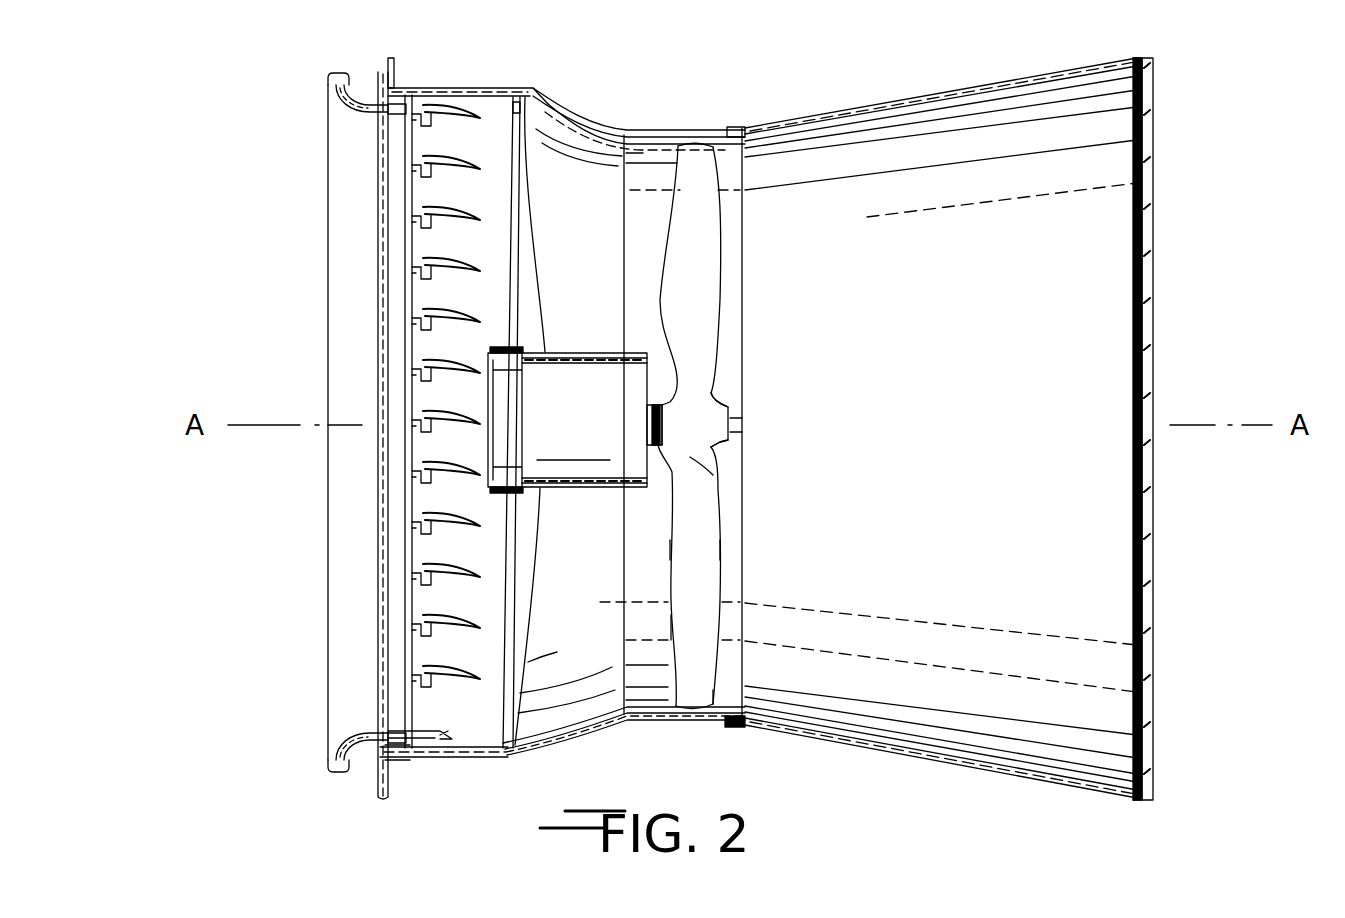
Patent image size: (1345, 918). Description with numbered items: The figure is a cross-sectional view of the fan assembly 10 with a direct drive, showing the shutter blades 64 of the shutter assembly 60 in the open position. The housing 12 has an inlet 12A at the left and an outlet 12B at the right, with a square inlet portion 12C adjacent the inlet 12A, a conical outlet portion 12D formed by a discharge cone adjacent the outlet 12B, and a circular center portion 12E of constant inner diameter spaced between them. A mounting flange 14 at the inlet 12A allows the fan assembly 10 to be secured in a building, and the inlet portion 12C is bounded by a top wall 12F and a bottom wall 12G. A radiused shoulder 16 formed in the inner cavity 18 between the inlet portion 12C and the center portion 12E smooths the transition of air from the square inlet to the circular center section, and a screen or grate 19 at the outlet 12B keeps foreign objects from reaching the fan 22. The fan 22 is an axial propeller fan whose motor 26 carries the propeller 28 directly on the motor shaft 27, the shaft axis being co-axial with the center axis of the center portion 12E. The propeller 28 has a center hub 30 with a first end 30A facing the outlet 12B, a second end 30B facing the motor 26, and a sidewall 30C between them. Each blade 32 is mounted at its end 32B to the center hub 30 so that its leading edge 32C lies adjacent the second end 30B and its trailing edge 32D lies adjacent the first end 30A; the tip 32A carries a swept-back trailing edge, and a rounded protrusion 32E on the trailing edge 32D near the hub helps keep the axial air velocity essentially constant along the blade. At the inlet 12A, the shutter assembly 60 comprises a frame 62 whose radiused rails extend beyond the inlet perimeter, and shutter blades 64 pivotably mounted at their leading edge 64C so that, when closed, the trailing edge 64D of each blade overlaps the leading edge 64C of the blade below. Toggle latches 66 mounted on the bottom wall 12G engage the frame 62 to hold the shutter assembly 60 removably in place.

The fan assembly 10 is at (637, 66).
The housing 12 is at (808, 122).
The inlet 12A is at (348, 220).
The outlet 12B is at (1166, 240).
The inlet portion 12C is at (440, 758).
The outlet portion 12D is at (884, 748).
The center portion 12E is at (633, 722).
The top wall 12F is at (447, 86).
The bottom wall 12G is at (420, 764).
The mounting flange 14 is at (389, 62).
The shoulder 16 is at (549, 101).
The inner cavity 18 is at (427, 396).
The screen or grate 19 is at (1150, 130).
The fan 22 is at (738, 346).
The motor 26 is at (555, 347).
The motor shaft 27 is at (665, 427).
The propeller 28 is at (713, 233).
The center hub 30 is at (740, 438).
The first end 30A is at (738, 408).
The second end 30B is at (647, 393).
The sidewall 30C is at (723, 456).
The blades 32 is at (710, 593).
The tip 32A is at (716, 708).
The end 32B is at (713, 475).
The leading edge 32C is at (720, 552).
The trailing edge 32D is at (668, 629).
The rounded protrusion 32E is at (668, 540).
The shutter assembly 60 is at (404, 297).
The frame 62 is at (333, 772).
The shutter blades 64 is at (452, 207).
The leading edge 64C is at (426, 155).
The trailing edge 64D is at (445, 206).
The toggle latches 66 is at (443, 735).